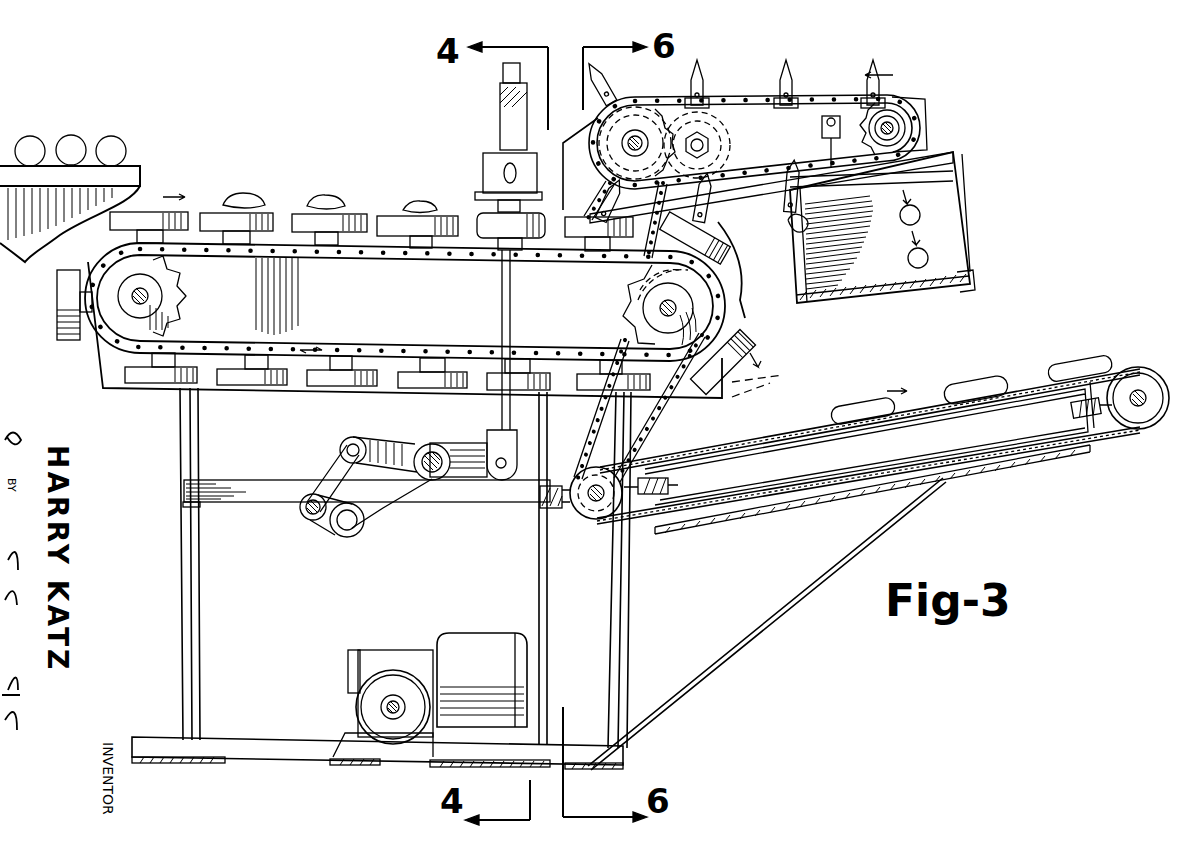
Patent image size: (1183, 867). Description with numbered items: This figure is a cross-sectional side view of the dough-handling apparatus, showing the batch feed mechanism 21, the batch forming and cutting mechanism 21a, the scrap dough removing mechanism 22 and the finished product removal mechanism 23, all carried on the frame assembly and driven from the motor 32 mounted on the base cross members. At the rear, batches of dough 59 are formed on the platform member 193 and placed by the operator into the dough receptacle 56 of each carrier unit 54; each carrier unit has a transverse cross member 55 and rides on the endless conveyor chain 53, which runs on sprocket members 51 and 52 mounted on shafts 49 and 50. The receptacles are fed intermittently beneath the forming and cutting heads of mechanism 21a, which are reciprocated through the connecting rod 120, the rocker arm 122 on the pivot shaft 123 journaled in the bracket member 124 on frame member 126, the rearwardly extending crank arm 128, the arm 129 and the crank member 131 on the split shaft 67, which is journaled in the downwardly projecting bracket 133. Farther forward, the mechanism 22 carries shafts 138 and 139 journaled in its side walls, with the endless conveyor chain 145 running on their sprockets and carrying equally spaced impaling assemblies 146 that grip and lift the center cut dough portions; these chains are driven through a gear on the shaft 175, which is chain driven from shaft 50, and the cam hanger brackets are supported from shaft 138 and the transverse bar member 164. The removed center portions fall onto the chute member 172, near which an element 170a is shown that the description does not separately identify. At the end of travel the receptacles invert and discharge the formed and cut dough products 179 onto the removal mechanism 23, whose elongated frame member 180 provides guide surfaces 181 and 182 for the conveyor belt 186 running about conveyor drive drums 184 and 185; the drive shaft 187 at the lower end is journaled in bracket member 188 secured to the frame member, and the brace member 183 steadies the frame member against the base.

The platform member 193 is at (140, 168).
The batches of dough 59 is at (242, 194).
The carrier units 54 is at (293, 200).
The dough receptacle 56 is at (323, 210).
The batch feed mechanism 21 is at (418, 246).
The batch forming and cutting mechanism 21a is at (486, 130).
The shaft 138 is at (640, 138).
The impaling assemblies 146 is at (700, 70).
The shaft 139 is at (898, 110).
The scrap dough removing mechanism 22 is at (776, 158).
The shaft 175 is at (703, 143).
The bar member 164 is at (824, 127).
The endless conveyor chain 145 is at (804, 164).
The chute member 172 is at (945, 246).
The sprocket member 51 is at (186, 291).
The shaft 49 is at (168, 310).
The cross member 55 is at (312, 262).
The endless conveyor chain 53 is at (396, 262).
The connecting rod 120 is at (502, 300).
The sprocket member 52 is at (614, 298).
The shaft 50 is at (664, 310).
The guide chute 170a is at (720, 303).
The finished product removal mechanism 23 is at (884, 428).
The elongated frame member 180 is at (914, 389).
The formed and cut dough products 179 is at (776, 375).
The guide surface 181 is at (774, 415).
The guide surface 182 is at (843, 474).
The conveyor drive drum 185 is at (1130, 422).
The conveyor belt 186 is at (1042, 454).
The crank arm 128 is at (385, 437).
The bracket member 124 is at (454, 436).
The rocker arm 122 is at (466, 452).
The arm 129 is at (327, 474).
The pivot shaft 123 is at (386, 508).
The frame member 126 is at (453, 509).
The crank member 131 is at (318, 520).
The bracket 133 is at (350, 530).
The split shaft 67 is at (349, 534).
The bracket member 188 is at (548, 530).
The conveyor drive drum 184 is at (592, 520).
The drive shaft 187 is at (602, 522).
The motor 32 is at (474, 638).
The brace member 183 is at (757, 623).